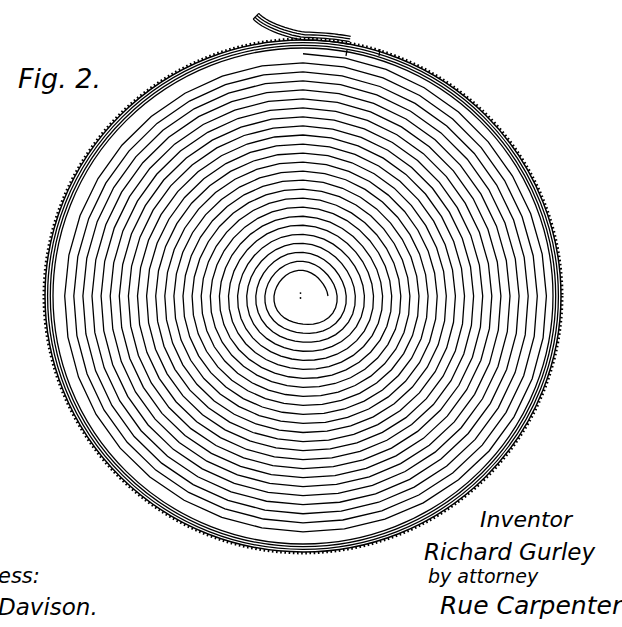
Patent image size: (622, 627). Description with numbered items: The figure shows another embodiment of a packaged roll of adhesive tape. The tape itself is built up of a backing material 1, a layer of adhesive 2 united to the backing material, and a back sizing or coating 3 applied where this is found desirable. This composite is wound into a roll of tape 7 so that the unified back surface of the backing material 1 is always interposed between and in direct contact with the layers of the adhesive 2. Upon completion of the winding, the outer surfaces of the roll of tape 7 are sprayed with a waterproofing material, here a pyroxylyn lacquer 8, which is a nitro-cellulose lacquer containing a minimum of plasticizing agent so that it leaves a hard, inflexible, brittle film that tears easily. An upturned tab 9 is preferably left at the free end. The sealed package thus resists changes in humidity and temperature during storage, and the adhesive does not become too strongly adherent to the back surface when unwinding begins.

The backing material 1 is at (330, 30).
The layer of adhesive 2 is at (350, 40).
The back sizing or coating 3 is at (377, 45).
The roll of tape 7 is at (492, 148).
The pyroxylyn lacquer 8 is at (474, 88).
The upturned tab 9 is at (273, 21).